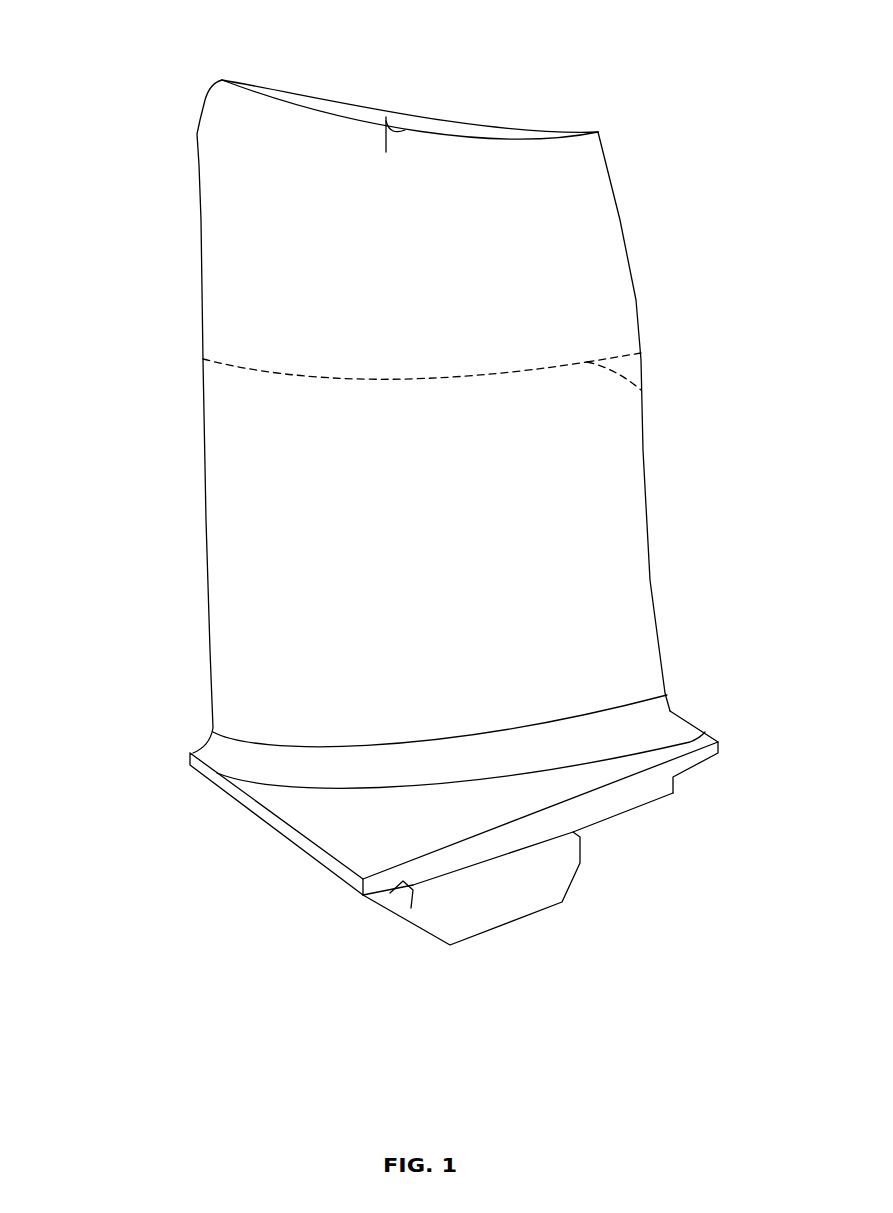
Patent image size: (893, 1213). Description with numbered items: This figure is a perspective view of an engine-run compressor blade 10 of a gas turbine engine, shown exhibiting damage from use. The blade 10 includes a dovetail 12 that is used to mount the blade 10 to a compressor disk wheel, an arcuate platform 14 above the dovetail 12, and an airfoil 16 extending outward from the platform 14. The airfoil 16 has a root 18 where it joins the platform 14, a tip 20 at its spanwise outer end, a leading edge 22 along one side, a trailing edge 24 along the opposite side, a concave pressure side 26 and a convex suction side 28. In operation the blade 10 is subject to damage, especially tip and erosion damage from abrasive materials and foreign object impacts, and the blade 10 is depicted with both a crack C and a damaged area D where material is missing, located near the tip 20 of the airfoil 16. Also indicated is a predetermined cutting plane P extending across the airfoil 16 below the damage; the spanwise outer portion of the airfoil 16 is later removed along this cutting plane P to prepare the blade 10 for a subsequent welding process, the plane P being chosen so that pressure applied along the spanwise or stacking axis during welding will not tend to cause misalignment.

The compressor blade 10 is at (609, 53).
The dovetail 12 is at (425, 912).
The arcuate platform 14 is at (294, 815).
The airfoil 16 is at (105, 83).
The root 18 is at (617, 725).
The tip 20 is at (505, 132).
The leading edge 22 is at (203, 310).
The trailing edge 24 is at (637, 308).
The concave pressure side 26 is at (218, 426).
The convex suction side 28 is at (395, 396).
The crack C is at (405, 130).
The damaged area D is at (203, 100).
The cutting plane P is at (641, 390).